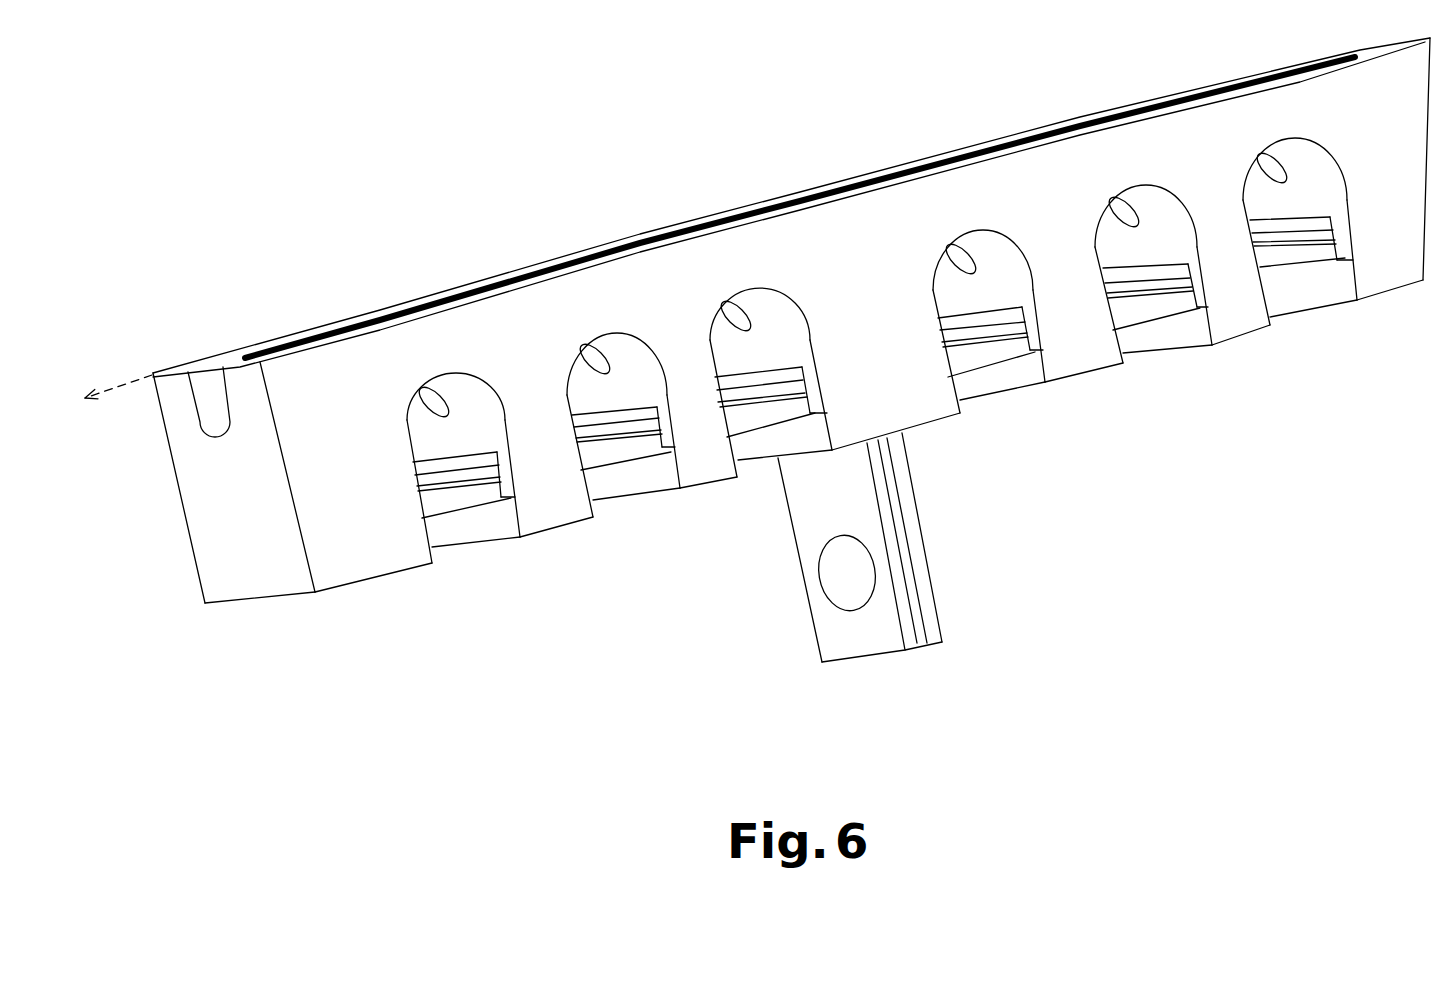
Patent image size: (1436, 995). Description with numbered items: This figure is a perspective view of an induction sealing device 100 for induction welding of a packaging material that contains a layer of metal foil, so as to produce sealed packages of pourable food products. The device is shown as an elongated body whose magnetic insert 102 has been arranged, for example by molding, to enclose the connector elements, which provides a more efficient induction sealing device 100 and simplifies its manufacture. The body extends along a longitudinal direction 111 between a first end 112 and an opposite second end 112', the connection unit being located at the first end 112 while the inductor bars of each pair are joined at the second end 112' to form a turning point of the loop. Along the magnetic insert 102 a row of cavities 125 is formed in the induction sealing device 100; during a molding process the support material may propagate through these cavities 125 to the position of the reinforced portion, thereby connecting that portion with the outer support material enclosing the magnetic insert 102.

The induction sealing device 100 is at (747, 350).
The magnetic insert 102 is at (235, 463).
The longitudinal direction 111 is at (141, 382).
The first end 112 is at (339, 435).
The second end 112' is at (1336, 181).
The cavities 125 is at (431, 460).